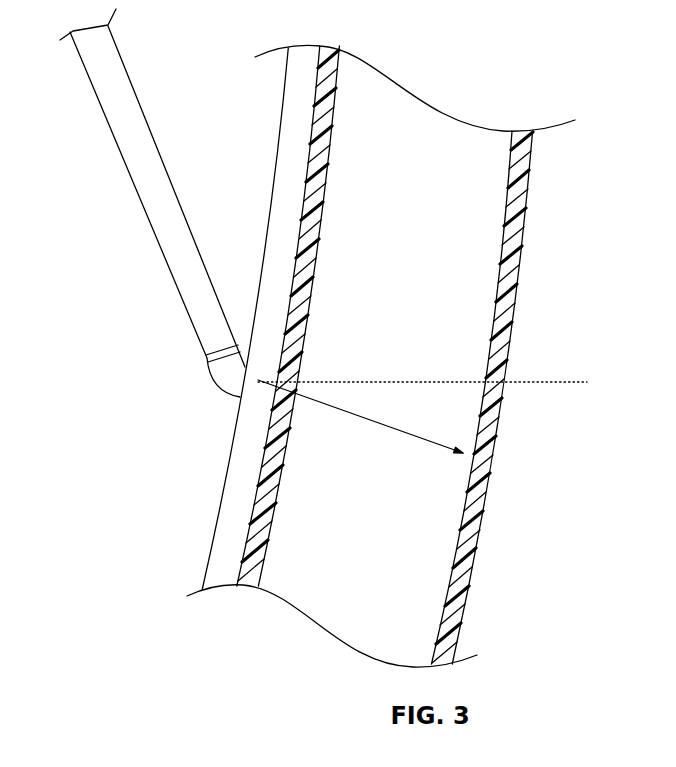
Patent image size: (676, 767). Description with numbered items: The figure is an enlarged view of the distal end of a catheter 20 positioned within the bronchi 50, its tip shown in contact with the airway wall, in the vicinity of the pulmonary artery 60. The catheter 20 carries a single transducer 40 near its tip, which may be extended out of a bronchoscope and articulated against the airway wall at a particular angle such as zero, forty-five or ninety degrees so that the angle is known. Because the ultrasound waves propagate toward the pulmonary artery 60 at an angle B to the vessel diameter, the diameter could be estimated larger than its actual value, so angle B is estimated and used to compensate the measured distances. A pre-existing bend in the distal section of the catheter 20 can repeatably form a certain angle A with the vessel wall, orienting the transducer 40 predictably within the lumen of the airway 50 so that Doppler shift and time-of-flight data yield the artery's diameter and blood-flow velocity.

The catheter 20 is at (104, 117).
The transducer 40 is at (218, 350).
The bronchi 50 is at (175, 446).
The pulmonary artery 60 is at (394, 310).
The angle A is at (177, 195).
The angle B is at (416, 382).